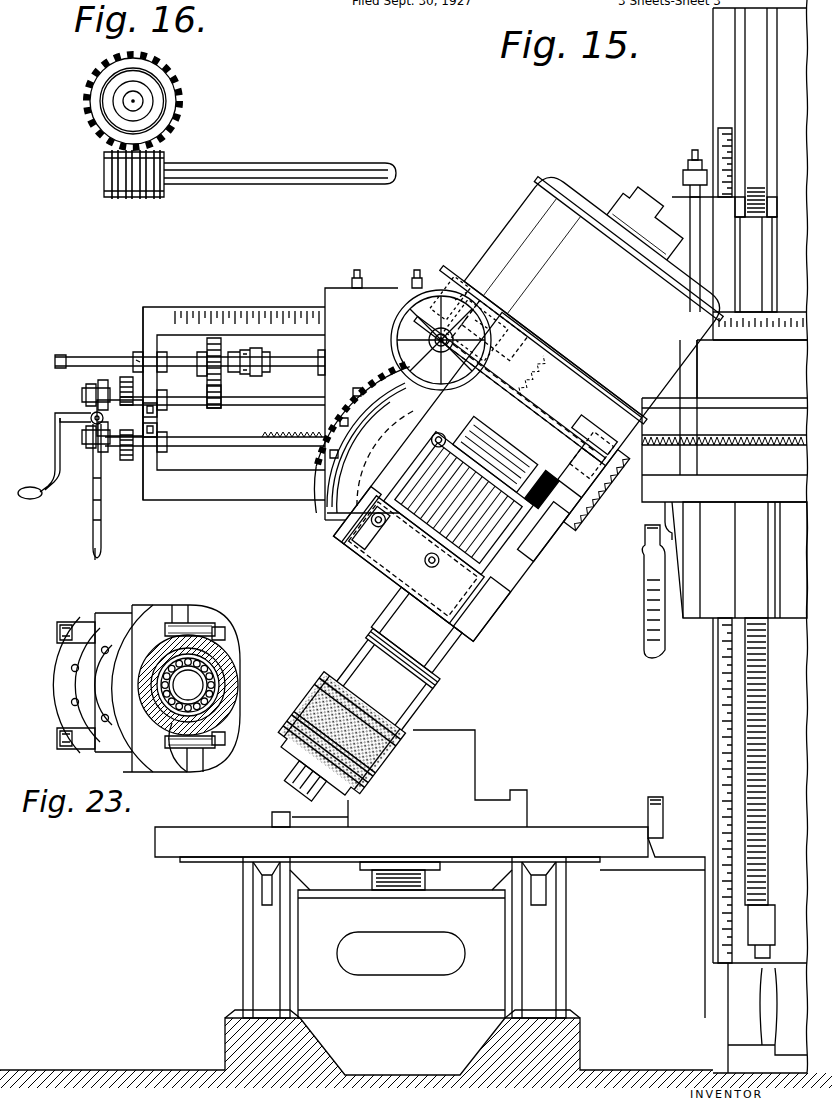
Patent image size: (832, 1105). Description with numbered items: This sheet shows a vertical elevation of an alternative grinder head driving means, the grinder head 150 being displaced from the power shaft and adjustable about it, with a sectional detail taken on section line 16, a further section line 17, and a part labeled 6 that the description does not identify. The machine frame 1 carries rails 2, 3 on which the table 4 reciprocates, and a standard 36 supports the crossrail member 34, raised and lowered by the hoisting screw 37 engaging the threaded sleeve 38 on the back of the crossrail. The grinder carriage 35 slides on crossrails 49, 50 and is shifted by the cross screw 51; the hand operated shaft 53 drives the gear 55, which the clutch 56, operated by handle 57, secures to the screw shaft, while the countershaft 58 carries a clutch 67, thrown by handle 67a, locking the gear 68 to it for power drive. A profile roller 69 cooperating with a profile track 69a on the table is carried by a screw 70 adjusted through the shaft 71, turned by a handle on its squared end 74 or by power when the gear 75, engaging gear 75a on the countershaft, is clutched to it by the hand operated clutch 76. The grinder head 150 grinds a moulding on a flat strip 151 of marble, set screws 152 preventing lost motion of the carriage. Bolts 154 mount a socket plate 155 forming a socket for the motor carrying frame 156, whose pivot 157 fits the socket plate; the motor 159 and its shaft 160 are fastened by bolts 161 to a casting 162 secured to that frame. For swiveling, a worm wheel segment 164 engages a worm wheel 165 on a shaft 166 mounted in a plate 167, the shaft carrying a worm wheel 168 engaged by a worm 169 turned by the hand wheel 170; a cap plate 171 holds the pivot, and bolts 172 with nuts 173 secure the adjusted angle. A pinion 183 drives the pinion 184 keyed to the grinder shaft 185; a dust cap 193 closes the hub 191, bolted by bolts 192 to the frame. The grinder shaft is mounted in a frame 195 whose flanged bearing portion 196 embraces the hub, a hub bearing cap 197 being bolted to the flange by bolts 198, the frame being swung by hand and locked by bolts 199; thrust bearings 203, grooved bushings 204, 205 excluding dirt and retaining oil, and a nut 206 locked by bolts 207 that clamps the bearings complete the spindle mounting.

In FIG. 15, the frame 1 is at (230, 942).
In FIG. 15, the rail 2 is at (245, 878).
In FIG. 15, the rail 3 is at (560, 878).
In FIG. 15, the table 4 is at (175, 827).
In FIG. 15, the adjusting screw 6 is at (372, 878).
In FIG. 15, the section line 16 is at (447, 300).
In FIG. 15, the spindle nose / axis 17 is at (286, 800).
In FIG. 15, the crossrail member 34 is at (143, 340).
In FIG. 15, the grinder carriage 35 is at (338, 286).
In FIG. 15, the standard 36 is at (712, 97).
In FIG. 15, the hoisting screw 37 is at (750, 738).
In FIG. 15, the threaded sleeve 38 is at (760, 257).
In FIG. 15, the crossrail 49 is at (236, 312).
In FIG. 15, the crossrail 50 is at (242, 500).
In FIG. 15, the cross screw 51 is at (265, 446).
In FIG. 15, the hand operated shaft 53 is at (90, 415).
In FIG. 15, the gear 55 is at (128, 460).
In FIG. 15, the clutch 56 is at (100, 448).
In FIG. 15, the handle 57 is at (96, 558).
In FIG. 15, the countershaft 58 is at (298, 397).
In FIG. 15, the clutch 67 is at (85, 390).
In FIG. 15, the handle 67a is at (103, 530).
In FIG. 15, the gear 68 is at (124, 377).
In FIG. 15, the profile roller 69 is at (645, 645).
In FIG. 15, the profile track 69a is at (663, 800).
In FIG. 15, the screw 70 is at (668, 517).
In FIG. 15, the shaft 71 is at (325, 362).
In FIG. 15, the squared end 74 is at (60, 357).
In FIG. 15, the gear 75 is at (212, 338).
In FIG. 15, the gear 75a is at (220, 408).
In FIG. 15, the hand operated clutch 76 is at (262, 360).
In FIG. 15, the grinder head 150 is at (290, 712).
In FIG. 15, the flat strip of marble 151 is at (399, 762).
In FIG. 15, the set screws 152 is at (357, 268).
In FIG. 15, the bolts 154 is at (330, 480).
In FIG. 15, the socket plate 155 is at (328, 512).
In FIG. 15, the motor carrying frame 156 is at (380, 446).
In FIG. 15, the pivot 157 is at (420, 535).
In FIG. 15, the motor 159 is at (600, 182).
In FIG. 15, the motor shaft 160 is at (668, 195).
In FIG. 15, the bolts 161 is at (618, 440).
In FIG. 15, the casting 162 is at (585, 392).
In FIG. 15, the worm wheel segment 164 is at (380, 392).
In FIG. 15, the worm wheel 165 is at (552, 360).
In FIG. 16, the shaft 166 is at (140, 105).
In FIG. 15, the plate 167 is at (558, 338).
In FIG. 16, the worm wheel 168 is at (180, 88).
In FIG. 15, the worm wheel 168 is at (472, 307).
In FIG. 16, the worm 169 is at (118, 196).
In FIG. 15, the worm 169 is at (455, 314).
In FIG. 15, the hand wheel 170 is at (400, 298).
In FIG. 15, the cap plate 171 is at (372, 570).
In FIG. 15, the bolts 172 is at (340, 528).
In FIG. 15, the nuts 173 is at (398, 592).
In FIG. 15, the pinion 183 is at (505, 585).
In FIG. 15, the pinion 184 is at (508, 560).
In FIG. 23, the grinder shaft 185 is at (172, 698).
In FIG. 23, the hub 191 is at (150, 765).
In FIG. 23, the bolts 192 is at (72, 662).
In FIG. 23, the dust cap 193 is at (78, 686).
In FIG. 15, the frame 195 is at (435, 660).
In FIG. 23, the frame 195 is at (148, 752).
In FIG. 15, the flanged bearing portion 196 is at (365, 585).
In FIG. 23, the flanged bearing portion 196 is at (175, 623).
In FIG. 15, the hub bearing cap 197 is at (340, 555).
In FIG. 23, the hub bearing cap 197 is at (240, 685).
In FIG. 15, the bolts 198 is at (360, 572).
In FIG. 23, the bolts 198 is at (225, 632).
In FIG. 15, the bolts 199 is at (550, 545).
In FIG. 23, the thrust bearings 203 is at (212, 678).
In FIG. 15, the grooved bushing 204 is at (470, 625).
In FIG. 15, the grooved bushing 205 is at (590, 510).
In FIG. 15, the nut 206 is at (578, 492).
In FIG. 15, the bolts 207 is at (572, 480).